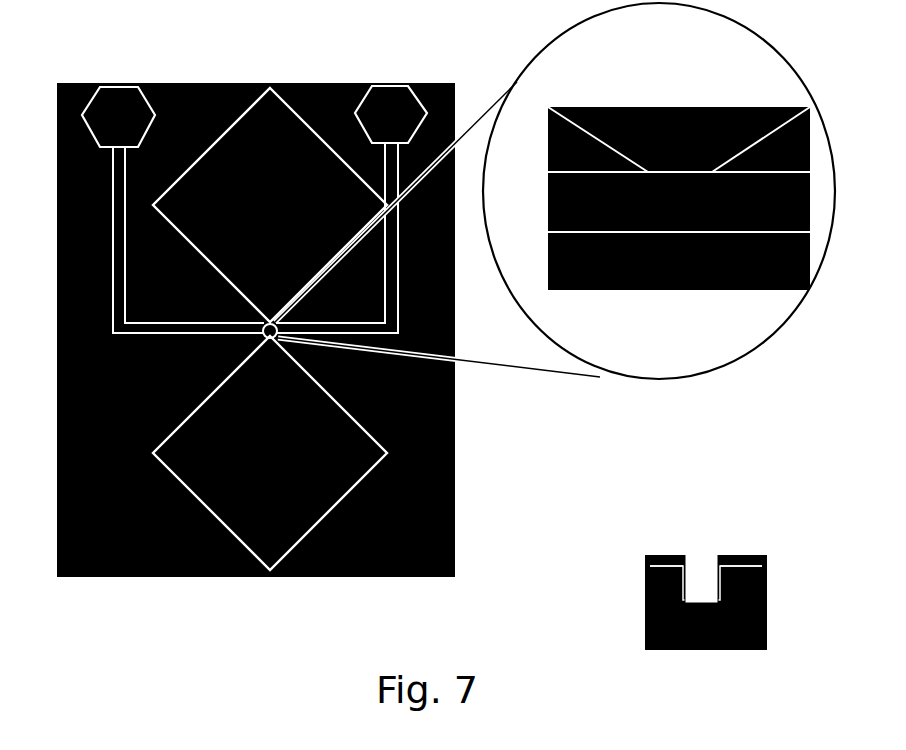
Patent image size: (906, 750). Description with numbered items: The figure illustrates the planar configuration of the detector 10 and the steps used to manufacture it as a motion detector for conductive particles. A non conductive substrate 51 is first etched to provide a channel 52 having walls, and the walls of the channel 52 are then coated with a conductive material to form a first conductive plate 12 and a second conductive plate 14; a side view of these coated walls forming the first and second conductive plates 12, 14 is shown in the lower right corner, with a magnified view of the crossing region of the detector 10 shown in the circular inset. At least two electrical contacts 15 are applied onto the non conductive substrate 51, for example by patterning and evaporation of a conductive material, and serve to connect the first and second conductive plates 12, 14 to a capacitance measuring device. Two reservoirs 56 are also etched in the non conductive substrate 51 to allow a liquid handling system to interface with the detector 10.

The non conductive substrate 51 is at (412, 366).
The electrical contacts 15 is at (346, 90).
The reservoirs 56 is at (270, 329).
The detector 10 is at (679, 197).
The first conductive plate 12 is at (650, 208).
The second conductive plate 14 is at (700, 208).
The channel 52 is at (705, 580).